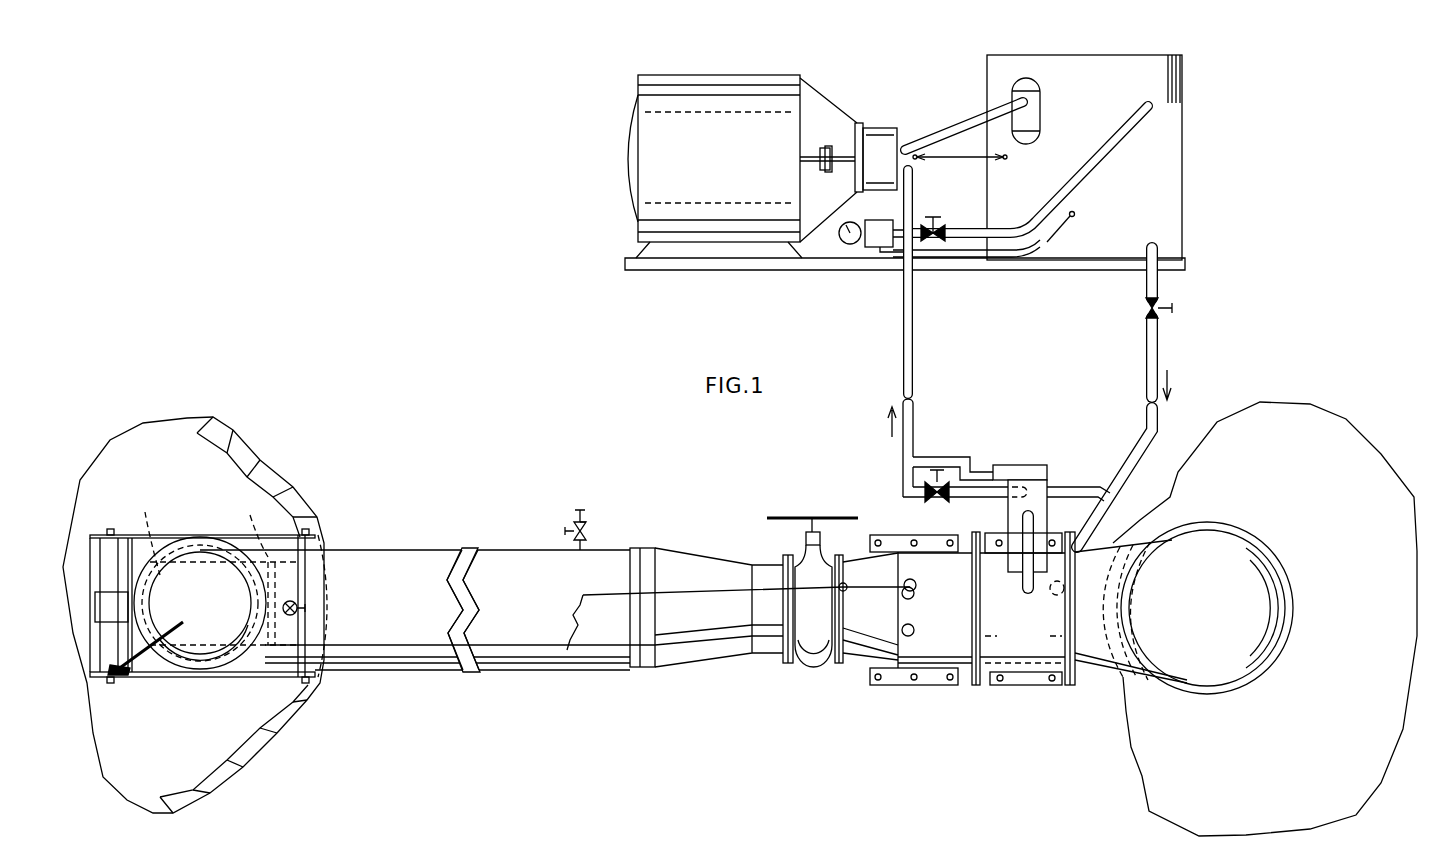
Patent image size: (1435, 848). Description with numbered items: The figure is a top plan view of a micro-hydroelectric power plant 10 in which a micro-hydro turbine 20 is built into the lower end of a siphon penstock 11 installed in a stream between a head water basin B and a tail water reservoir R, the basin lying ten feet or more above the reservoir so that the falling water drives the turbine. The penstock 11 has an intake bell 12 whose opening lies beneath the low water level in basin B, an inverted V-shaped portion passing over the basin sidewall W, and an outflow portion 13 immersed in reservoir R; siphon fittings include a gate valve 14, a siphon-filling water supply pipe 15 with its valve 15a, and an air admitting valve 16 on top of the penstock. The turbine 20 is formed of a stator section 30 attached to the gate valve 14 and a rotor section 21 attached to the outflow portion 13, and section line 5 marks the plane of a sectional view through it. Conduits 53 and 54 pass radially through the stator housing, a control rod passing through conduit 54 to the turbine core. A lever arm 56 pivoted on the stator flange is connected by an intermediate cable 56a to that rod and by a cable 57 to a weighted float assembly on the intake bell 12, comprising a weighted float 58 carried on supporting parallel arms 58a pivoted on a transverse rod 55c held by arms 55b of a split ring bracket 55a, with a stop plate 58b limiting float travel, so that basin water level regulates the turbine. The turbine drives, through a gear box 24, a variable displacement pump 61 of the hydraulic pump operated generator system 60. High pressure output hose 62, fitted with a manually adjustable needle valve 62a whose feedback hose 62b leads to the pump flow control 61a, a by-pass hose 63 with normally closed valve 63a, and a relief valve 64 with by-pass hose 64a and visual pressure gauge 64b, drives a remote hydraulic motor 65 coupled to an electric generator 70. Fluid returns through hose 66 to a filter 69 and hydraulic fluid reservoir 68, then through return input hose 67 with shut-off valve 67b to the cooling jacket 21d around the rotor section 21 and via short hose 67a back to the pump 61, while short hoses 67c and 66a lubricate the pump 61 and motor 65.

The micro-hydroelectric power plant 10 is at (491, 494).
The penstock 11 is at (584, 670).
The intake bell 12 is at (200, 563).
The outflow portion 13 is at (1127, 677).
The gate valve 14 is at (800, 550).
The siphon-filling water supply pipe 15 is at (582, 512).
The valve 15a is at (588, 532).
The air admitting valve 16 is at (305, 600).
The micro-hydro turbine 20 is at (943, 738).
The rotor section 21 is at (1030, 676).
The jacket 21d is at (1047, 649).
The gear box 24 is at (1002, 560).
The stator section 30 is at (860, 665).
The conduit 53 is at (914, 630).
The conduit 54 is at (916, 586).
The split ring bracket 55a is at (200, 582).
The arms 55b is at (224, 574).
The transverse rod 55c is at (330, 545).
The lever arm 56 is at (847, 597).
The intermediate cable 56a is at (870, 639).
The cable 57 is at (683, 595).
The weighted float 58 is at (88, 545).
The supporting parallel arms 58a is at (110, 682).
The stop plate 58b is at (120, 605).
The hydraulic pump operated generator system 60 is at (929, 66).
The variable displacement pump 61 is at (1048, 489).
The flow control 61a is at (1002, 465).
The high pressure output hose 62 is at (916, 326).
The manually adjustable needle valve 62a is at (925, 497).
The feedback hose 62b is at (950, 456).
The by-pass hose 63 is at (1110, 152).
The normally closed valve 63a is at (940, 225).
The relief valve 64 is at (878, 258).
The by-pass hose 64a is at (1052, 237).
The visual pressure gauge 64b is at (846, 250).
The hydraulic motor 65 is at (881, 131).
The hose 66 is at (946, 130).
The short hose 66a is at (962, 165).
The return input hose 67 is at (1160, 360).
The short hose 67a is at (1035, 528).
The shut-off valve 67b is at (1145, 308).
The short hose 67c is at (1090, 487).
The hydraulic fluid reservoir 68 is at (1183, 106).
The filter 69 is at (1040, 118).
The electric generator 70 is at (722, 169).
The head water basin B is at (154, 482).
The tail water reservoir R is at (1285, 717).
The basin sidewall W is at (300, 497).
The section line 5 is at (985, 532).